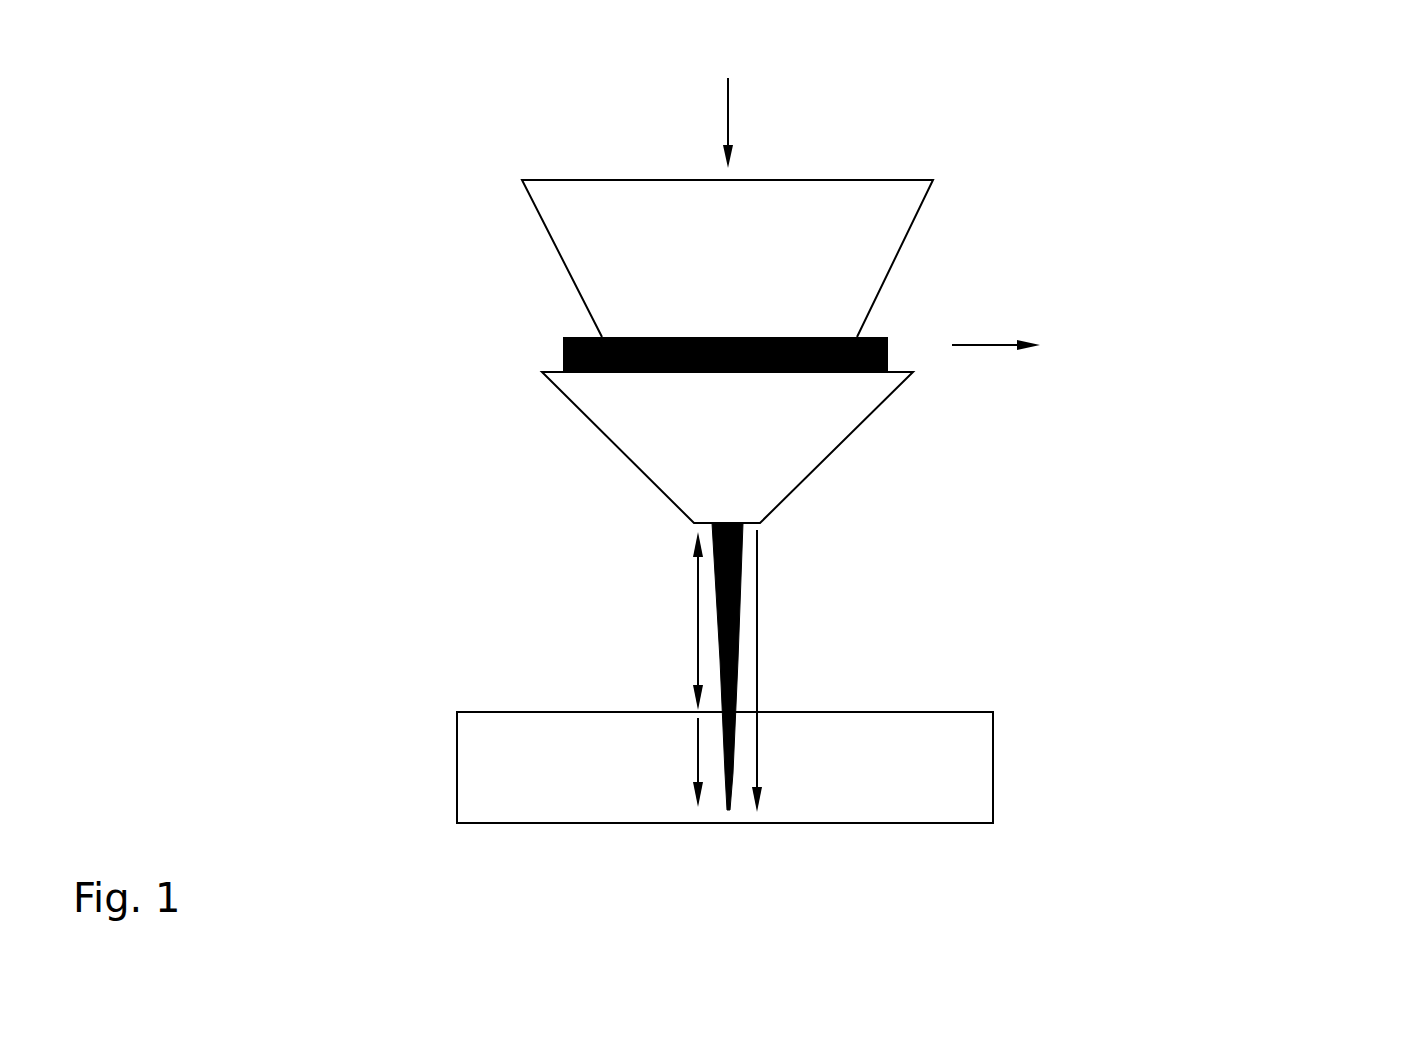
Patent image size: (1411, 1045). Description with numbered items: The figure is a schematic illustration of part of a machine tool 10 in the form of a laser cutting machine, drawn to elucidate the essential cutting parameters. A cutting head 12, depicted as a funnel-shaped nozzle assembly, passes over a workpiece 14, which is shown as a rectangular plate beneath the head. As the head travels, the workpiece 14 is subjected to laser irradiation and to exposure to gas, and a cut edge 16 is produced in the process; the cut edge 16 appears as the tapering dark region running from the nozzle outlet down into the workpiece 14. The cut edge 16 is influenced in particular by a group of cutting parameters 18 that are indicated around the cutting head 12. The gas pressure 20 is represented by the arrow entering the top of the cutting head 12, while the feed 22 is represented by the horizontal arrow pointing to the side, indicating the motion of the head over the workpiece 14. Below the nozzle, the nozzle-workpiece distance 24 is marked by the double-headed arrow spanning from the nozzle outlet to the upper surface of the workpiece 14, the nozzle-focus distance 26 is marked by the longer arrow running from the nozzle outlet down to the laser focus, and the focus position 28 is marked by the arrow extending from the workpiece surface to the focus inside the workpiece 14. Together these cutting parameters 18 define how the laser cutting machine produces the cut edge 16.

The machine tool 10 is at (818, 285).
The cutting head 12 is at (1060, 252).
The workpiece 14 is at (1060, 657).
The cut edge 16 is at (730, 773).
The cutting parameters 18 is at (336, 354).
The gas pressure 20 is at (730, 113).
The feed 22 is at (985, 345).
The nozzle-workpiece distance 24 is at (697, 602).
The nozzle-focus distance 26 is at (758, 638).
The focus position 28 is at (697, 750).